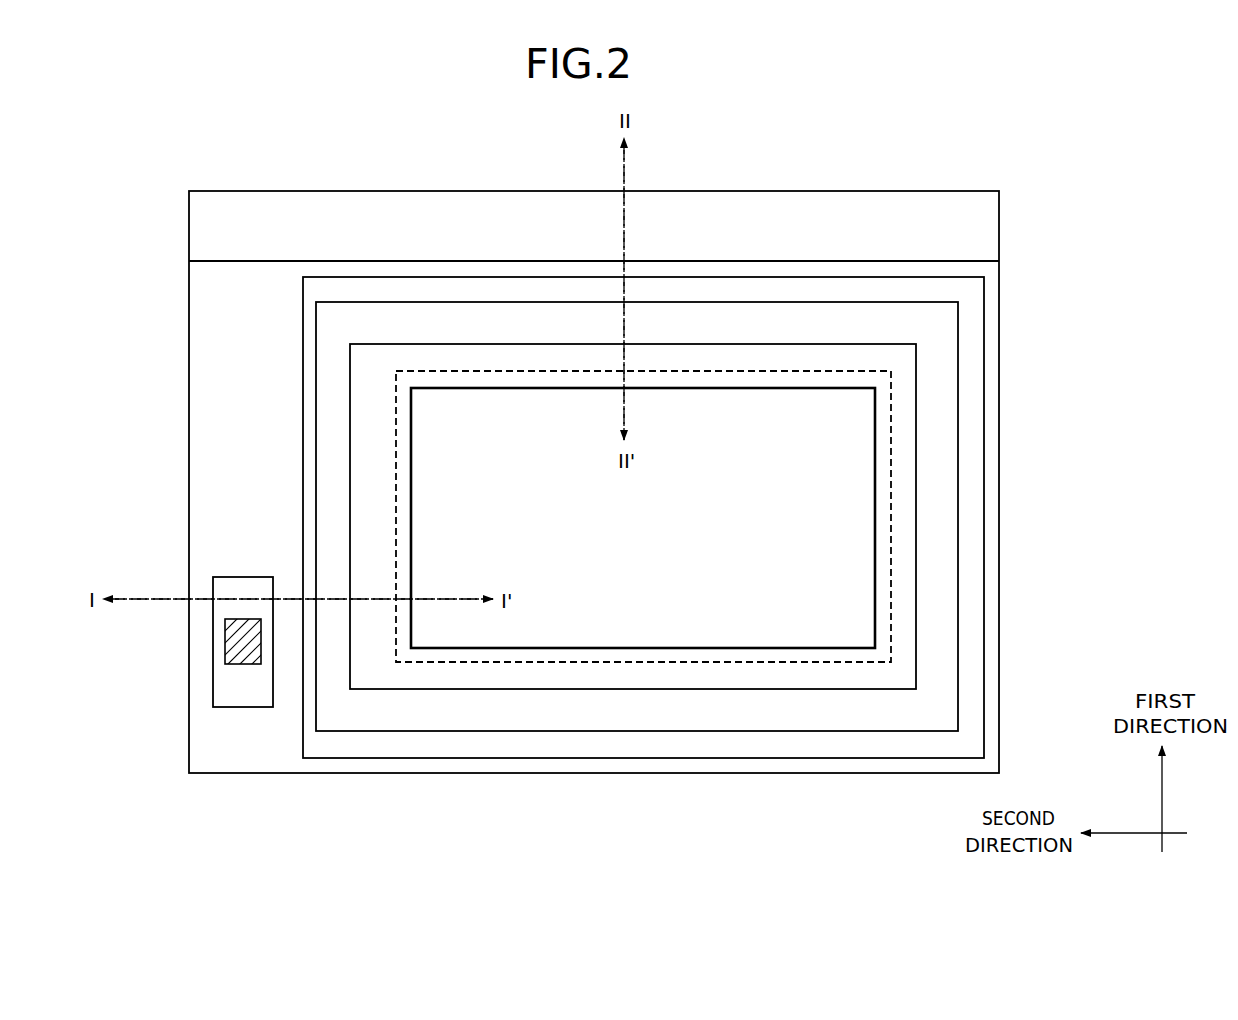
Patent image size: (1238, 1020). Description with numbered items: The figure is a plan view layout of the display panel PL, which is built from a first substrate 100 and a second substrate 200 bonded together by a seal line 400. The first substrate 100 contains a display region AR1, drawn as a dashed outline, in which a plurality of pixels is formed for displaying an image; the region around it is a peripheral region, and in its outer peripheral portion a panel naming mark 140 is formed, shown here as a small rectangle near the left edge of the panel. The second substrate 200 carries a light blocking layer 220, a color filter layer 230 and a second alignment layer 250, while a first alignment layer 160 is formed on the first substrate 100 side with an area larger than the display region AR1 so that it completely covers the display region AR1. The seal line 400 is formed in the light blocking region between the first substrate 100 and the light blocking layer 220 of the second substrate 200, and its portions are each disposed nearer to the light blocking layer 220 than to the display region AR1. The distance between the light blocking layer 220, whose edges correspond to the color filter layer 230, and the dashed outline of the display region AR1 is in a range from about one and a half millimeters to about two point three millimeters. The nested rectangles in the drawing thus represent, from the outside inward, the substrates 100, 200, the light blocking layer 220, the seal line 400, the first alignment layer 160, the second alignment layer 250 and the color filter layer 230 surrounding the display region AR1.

The first substrate 100 is at (956, 186).
The second substrate 200 is at (956, 260).
The light blocking layer 220 is at (986, 381).
The seal line 400 is at (633, 733).
The first alignment layer 160 is at (893, 533).
The second alignment layer 250 is at (893, 594).
The color filter layer 230 is at (409, 459).
The panel naming mark 140 is at (224, 684).
The display region AR1 is at (462, 366).
The display panel PL is at (139, 177).